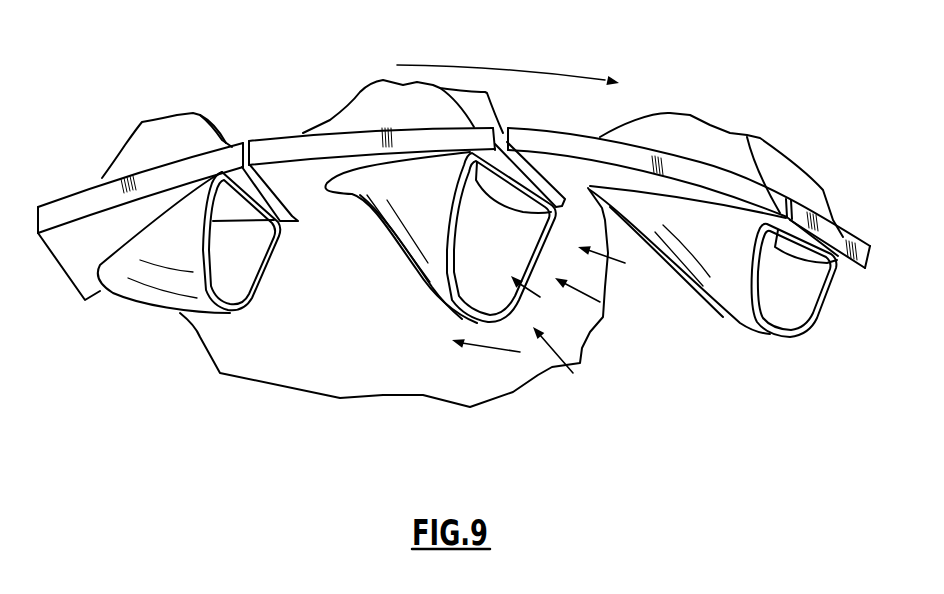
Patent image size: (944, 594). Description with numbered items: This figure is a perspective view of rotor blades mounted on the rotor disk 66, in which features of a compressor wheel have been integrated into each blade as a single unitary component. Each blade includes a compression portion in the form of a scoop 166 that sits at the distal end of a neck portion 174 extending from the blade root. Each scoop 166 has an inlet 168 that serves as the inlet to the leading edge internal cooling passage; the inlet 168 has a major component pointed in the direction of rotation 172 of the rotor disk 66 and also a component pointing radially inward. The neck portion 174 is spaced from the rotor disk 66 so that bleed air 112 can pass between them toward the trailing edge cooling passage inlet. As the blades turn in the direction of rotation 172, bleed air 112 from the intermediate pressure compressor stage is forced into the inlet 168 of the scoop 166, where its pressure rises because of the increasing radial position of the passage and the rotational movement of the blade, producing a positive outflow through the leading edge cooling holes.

The rotor disk 66 is at (402, 370).
The bleed air 112 is at (500, 350).
The scoop 166 is at (165, 315).
The inlet 168 is at (240, 262).
The direction of rotation 172 is at (517, 68).
The neck portion 174 is at (362, 231).